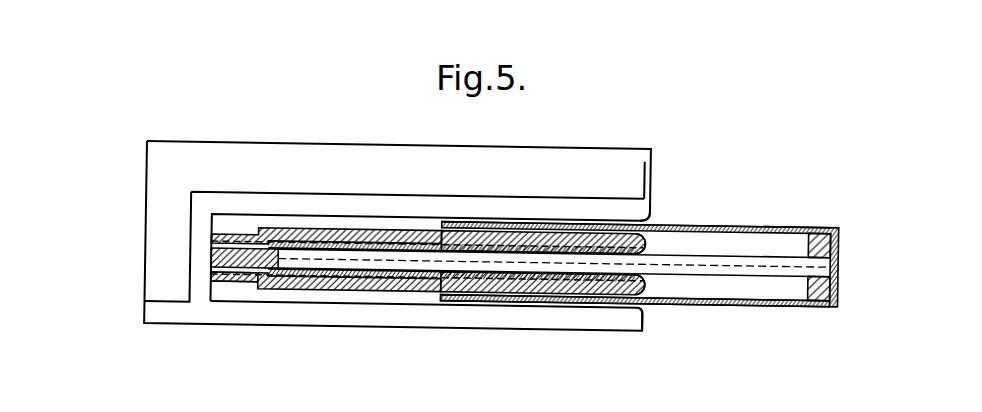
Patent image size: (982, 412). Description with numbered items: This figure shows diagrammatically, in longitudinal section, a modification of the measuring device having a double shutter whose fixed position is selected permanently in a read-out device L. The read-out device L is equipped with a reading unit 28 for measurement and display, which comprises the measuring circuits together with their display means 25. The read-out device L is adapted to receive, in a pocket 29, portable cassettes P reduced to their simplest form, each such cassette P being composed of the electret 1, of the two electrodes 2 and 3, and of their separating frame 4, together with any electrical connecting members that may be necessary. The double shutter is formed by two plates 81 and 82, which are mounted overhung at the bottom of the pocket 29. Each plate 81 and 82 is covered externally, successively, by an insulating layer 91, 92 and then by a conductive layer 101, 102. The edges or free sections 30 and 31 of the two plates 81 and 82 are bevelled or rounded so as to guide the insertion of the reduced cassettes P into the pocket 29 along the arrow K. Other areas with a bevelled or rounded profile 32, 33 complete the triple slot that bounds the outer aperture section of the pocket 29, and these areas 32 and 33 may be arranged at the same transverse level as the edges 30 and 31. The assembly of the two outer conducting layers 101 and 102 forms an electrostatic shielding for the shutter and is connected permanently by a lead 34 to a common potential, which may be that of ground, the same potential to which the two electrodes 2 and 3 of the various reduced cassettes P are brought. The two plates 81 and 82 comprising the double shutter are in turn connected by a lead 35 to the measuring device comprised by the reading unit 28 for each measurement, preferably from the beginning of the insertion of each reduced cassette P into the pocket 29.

The electret 1 is at (747, 256).
The electrode 2 is at (737, 297).
The electrode 3 is at (737, 216).
The separating frame 4 is at (820, 291).
The plate 81 is at (645, 273).
The plate 82 is at (648, 236).
The insulating layer 91 is at (412, 288).
The insulating layer 92 is at (441, 225).
The conductive layer 101 is at (373, 288).
The conductive layer 102 is at (403, 225).
The display means 25 is at (652, 158).
The reading unit 28 is at (233, 179).
The pocket 29 is at (349, 211).
The free section 30 is at (651, 301).
The free section 31 is at (663, 218).
The bevelled or rounded profile area 32 is at (648, 306).
The bevelled or rounded profile area 33 is at (653, 209).
The lead 34 is at (210, 272).
The lead 35 is at (210, 256).
The read-out device L is at (221, 139).
The portable cassette P is at (793, 215).
The insertion direction arrow K is at (844, 257).